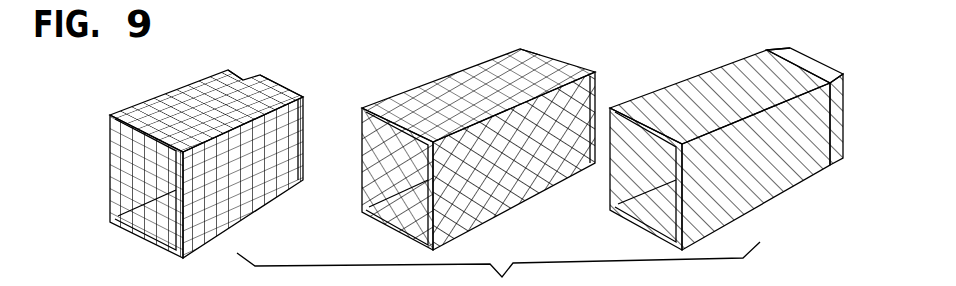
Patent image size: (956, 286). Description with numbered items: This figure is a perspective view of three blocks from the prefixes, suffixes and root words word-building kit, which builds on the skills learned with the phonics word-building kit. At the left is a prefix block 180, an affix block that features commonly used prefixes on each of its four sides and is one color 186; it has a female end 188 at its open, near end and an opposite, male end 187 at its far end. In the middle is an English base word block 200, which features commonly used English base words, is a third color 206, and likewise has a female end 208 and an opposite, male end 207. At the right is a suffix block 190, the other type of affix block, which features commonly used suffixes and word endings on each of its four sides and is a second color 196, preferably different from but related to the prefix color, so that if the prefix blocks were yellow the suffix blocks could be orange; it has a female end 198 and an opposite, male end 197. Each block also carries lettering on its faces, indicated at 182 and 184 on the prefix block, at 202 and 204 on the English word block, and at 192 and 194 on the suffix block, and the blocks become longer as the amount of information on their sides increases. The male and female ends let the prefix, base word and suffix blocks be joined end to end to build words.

The prefix block 180 is at (136, 96).
The top face of first block 182 is at (177, 93).
The side face word segment of first block 184 is at (262, 222).
The color 186 is at (218, 72).
The male end 187 is at (277, 98).
The female end 188 is at (122, 224).
The suffix block 190 is at (684, 64).
The top face of third block 192 is at (743, 78).
The side face word segment of third block 194 is at (771, 200).
The second color 196 is at (767, 55).
The male end 197 is at (822, 65).
The female end 198 is at (628, 214).
The English base word block 200 is at (384, 93).
The top face of second block 202 is at (425, 85).
The side face word segment of second block 204 is at (500, 218).
The third color 206 is at (522, 50).
The male end 207 is at (577, 82).
The female end 208 is at (373, 220).